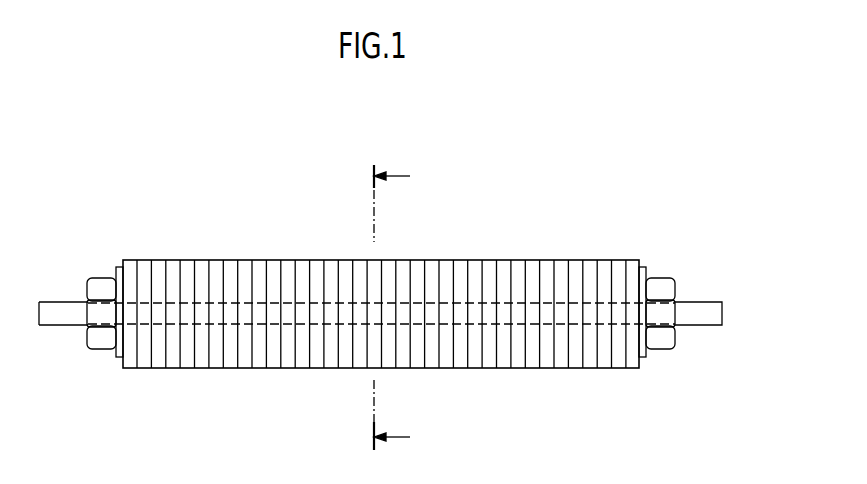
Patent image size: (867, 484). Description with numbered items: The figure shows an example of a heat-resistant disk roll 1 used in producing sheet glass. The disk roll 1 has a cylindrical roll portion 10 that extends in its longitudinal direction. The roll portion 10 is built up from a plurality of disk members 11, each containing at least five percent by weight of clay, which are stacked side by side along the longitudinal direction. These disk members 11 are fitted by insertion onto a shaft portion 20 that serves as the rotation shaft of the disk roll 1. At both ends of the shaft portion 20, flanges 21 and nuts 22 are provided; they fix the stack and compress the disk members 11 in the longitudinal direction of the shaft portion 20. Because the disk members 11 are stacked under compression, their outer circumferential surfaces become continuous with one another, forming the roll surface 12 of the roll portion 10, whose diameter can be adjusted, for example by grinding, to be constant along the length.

The disk roll 1 is at (522, 189).
The roll portion 10 is at (638, 249).
The disk members 11 is at (575, 367).
The roll surface 12 is at (214, 369).
The shaft portion 20 is at (698, 309).
The flanges 21 is at (118, 273).
The nuts 22 is at (104, 286).